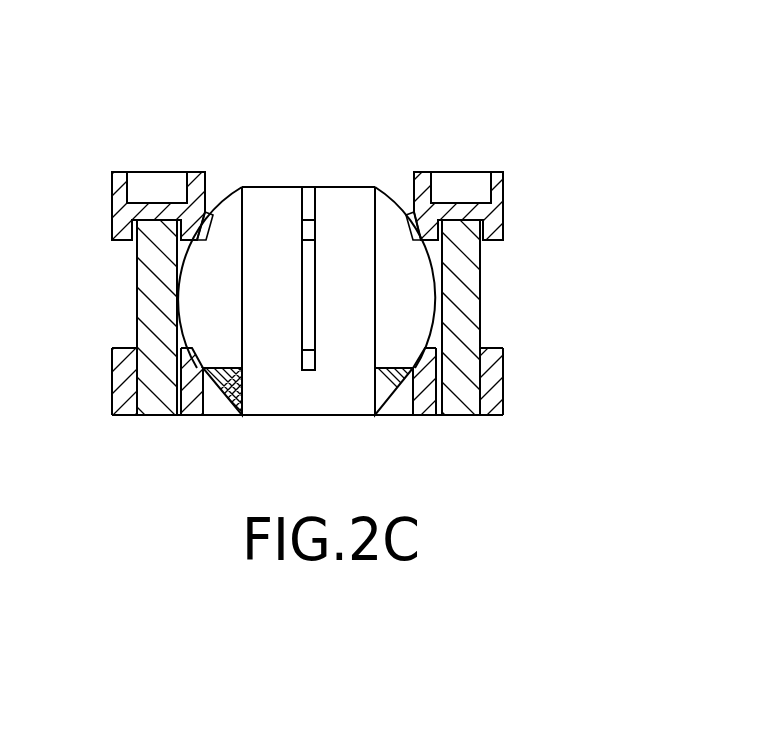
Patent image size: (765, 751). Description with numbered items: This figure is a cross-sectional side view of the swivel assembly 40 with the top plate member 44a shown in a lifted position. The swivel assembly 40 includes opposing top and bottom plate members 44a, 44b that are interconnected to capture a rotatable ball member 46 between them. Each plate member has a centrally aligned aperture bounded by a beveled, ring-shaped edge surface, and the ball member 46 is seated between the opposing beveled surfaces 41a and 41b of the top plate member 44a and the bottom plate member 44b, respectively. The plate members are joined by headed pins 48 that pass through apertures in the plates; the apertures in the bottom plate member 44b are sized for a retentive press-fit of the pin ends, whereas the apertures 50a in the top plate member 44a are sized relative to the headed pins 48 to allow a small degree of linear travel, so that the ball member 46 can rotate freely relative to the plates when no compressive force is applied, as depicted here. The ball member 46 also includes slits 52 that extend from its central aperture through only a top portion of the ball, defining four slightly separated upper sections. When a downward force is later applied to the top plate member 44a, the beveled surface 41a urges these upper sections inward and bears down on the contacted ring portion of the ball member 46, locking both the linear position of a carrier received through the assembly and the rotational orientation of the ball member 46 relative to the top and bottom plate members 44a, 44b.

The swivel assembly 40 is at (248, 150).
The beveled edge surface 41a is at (200, 226).
The beveled edge surface 41b is at (199, 362).
The top plate member 44a is at (504, 203).
The bottom plate member 44b is at (497, 401).
The rotatable ball member 46 is at (278, 202).
The headed pin 48 is at (147, 291).
The aperture 50a is at (462, 186).
The slit 52 is at (308, 257).